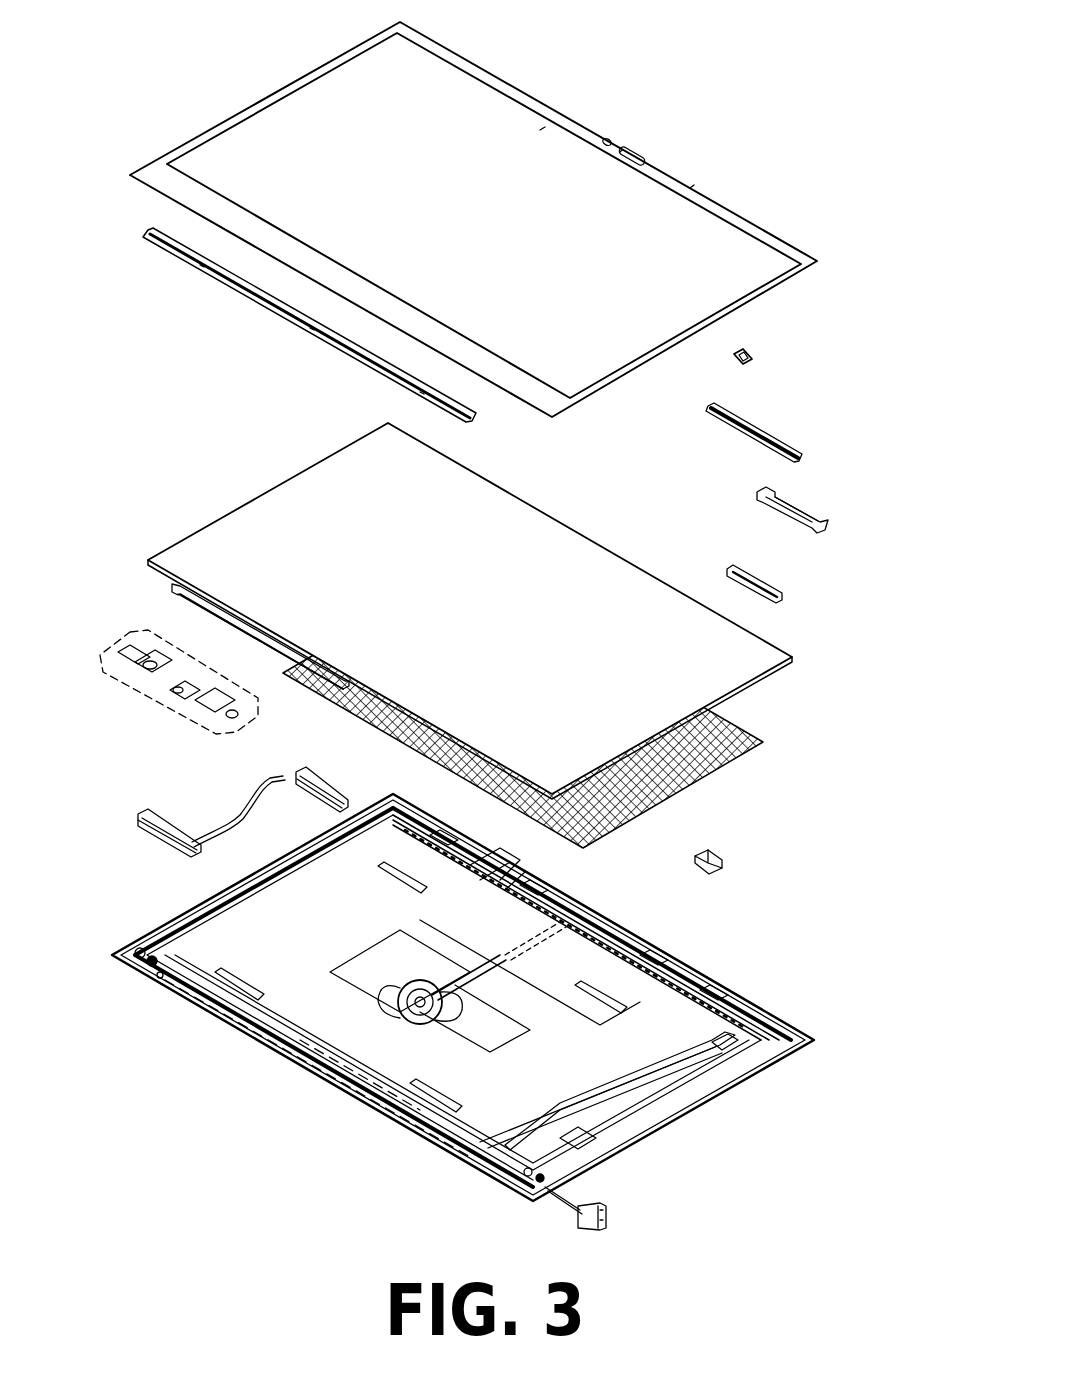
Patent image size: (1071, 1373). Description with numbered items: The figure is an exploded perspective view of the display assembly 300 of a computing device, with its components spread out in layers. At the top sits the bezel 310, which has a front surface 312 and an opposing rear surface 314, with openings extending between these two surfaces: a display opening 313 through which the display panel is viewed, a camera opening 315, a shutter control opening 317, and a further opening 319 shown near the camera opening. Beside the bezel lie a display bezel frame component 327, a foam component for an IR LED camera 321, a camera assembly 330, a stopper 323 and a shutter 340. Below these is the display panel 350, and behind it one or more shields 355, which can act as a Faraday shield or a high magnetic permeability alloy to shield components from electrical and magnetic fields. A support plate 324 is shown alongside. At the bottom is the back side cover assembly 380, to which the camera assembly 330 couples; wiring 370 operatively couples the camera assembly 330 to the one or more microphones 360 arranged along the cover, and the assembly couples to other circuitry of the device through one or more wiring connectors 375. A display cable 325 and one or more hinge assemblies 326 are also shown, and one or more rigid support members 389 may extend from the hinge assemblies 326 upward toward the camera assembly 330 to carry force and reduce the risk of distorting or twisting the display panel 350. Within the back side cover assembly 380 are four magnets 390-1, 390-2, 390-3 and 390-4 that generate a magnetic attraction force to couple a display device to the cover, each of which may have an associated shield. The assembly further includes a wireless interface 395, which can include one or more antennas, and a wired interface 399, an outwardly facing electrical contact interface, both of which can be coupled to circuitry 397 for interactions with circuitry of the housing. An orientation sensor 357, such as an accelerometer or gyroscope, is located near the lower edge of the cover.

The display assembly 300 is at (183, 26).
The bezel 310 is at (823, 262).
The front surface 312 is at (690, 187).
The display opening 313 is at (540, 132).
The rear surface 314 is at (710, 228).
The camera opening 315 is at (608, 139).
The shutter control opening 317 is at (626, 166).
The sensor opening 319 is at (620, 150).
The foam component for an IR LED camera 321 is at (754, 357).
The stopper 323 is at (820, 518).
The support plate 324 is at (724, 860).
The display cable 325 is at (238, 812).
The hinge assemblies 326 is at (150, 692).
The display bezel frame component 327 is at (148, 243).
The camera assembly 330 is at (765, 433).
The shutter 340 is at (782, 597).
The display panel 350 is at (745, 680).
The shields 355 is at (720, 770).
The orientation sensor 357 is at (598, 1137).
The microphones 360 is at (487, 845).
The wiring 370 is at (605, 950).
The wiring connectors 375 is at (607, 1226).
The back side cover assembly 380 is at (690, 1111).
The rigid support members 389 is at (512, 915).
The magnet 390-1 is at (605, 1015).
The magnet 390-2 is at (440, 1094).
The magnet 390-3 is at (230, 975).
The magnet 390-4 is at (395, 880).
The wireless interface 395 is at (415, 988).
The circuitry 397 is at (357, 1040).
The wired interface 399 is at (465, 940).